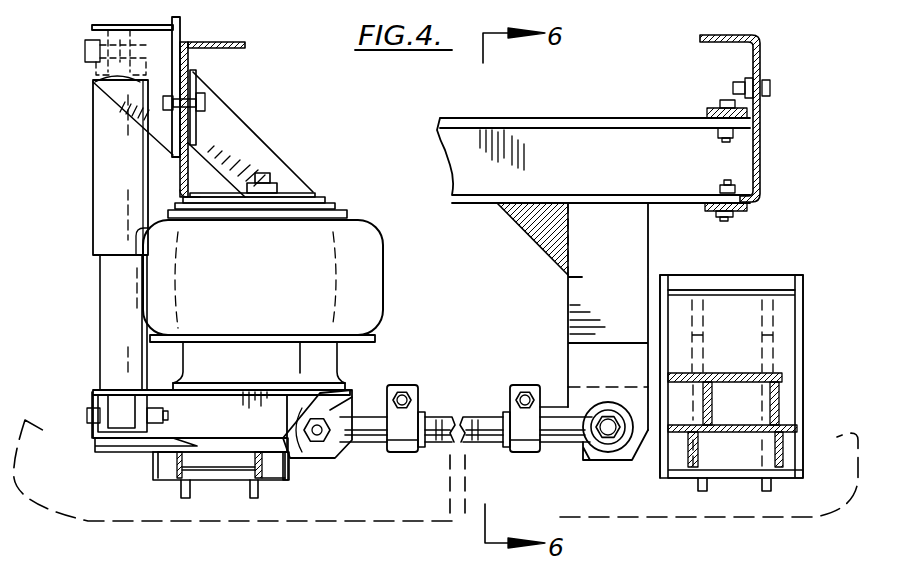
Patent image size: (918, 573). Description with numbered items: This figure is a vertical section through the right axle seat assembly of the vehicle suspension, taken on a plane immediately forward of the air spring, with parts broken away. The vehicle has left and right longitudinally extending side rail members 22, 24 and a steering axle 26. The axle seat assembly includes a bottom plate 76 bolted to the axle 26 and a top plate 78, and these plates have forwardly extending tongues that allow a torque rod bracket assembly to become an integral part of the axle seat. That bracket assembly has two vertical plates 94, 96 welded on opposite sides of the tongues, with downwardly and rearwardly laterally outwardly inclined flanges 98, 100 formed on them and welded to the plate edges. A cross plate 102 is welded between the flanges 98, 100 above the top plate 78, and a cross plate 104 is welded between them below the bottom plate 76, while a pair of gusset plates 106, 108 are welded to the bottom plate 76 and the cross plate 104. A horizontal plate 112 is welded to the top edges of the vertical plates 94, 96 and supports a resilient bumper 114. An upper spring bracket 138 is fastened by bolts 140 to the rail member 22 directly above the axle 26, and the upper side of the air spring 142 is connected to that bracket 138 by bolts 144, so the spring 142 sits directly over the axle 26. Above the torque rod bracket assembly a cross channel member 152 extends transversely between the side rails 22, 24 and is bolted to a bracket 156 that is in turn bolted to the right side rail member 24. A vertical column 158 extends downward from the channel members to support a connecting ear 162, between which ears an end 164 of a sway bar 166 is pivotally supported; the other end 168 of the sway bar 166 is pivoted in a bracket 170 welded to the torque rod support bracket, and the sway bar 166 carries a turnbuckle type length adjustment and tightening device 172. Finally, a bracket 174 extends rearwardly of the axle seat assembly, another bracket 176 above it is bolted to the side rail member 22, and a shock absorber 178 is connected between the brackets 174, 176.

The left side rail member 22 is at (227, 42).
The right side rail member 24 is at (763, 114).
The steering axle 26 is at (114, 524).
The bottom plate 76 is at (216, 445).
The top plate 78 is at (342, 376).
The vertical plate 94 is at (185, 498).
The vertical plate 96 is at (254, 498).
The inclined flange 98 is at (153, 464).
The inclined flange 100 is at (302, 462).
The cross plate 102 is at (787, 323).
The cross plate 104 is at (220, 468).
The gusset plate 106 is at (177, 470).
The gusset plate 108 is at (265, 470).
The horizontal plate 112 is at (765, 295).
The resilient bumper 114 is at (720, 280).
The upper spring bracket 138 is at (237, 125).
The bolts 140 is at (200, 99).
The air spring 142 is at (363, 266).
The bolts 144 is at (270, 173).
The cross channel member 152 is at (574, 125).
The bracket 156 is at (743, 107).
The vertical column 158 is at (568, 301).
The connecting ear 162 is at (622, 458).
The end of sway bar 164 is at (603, 462).
The sway bar 166 is at (562, 448).
The other end of sway bar 168 is at (303, 462).
The bracket 170 is at (355, 392).
The turnbuckle type length adjustment and tightening device 172 is at (448, 418).
The bracket 174 is at (95, 393).
The bracket 176 is at (92, 35).
The shock absorber 178 is at (100, 203).